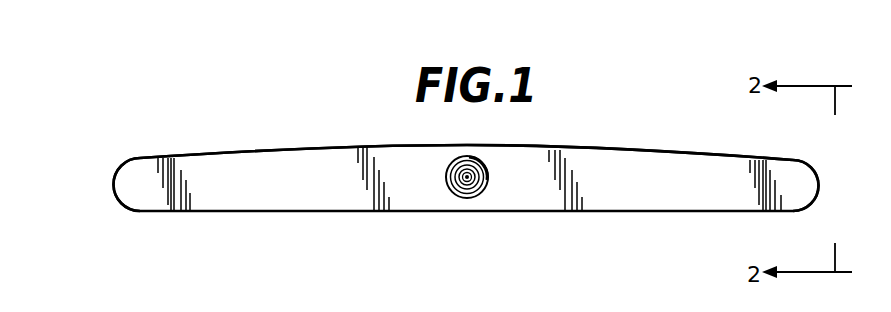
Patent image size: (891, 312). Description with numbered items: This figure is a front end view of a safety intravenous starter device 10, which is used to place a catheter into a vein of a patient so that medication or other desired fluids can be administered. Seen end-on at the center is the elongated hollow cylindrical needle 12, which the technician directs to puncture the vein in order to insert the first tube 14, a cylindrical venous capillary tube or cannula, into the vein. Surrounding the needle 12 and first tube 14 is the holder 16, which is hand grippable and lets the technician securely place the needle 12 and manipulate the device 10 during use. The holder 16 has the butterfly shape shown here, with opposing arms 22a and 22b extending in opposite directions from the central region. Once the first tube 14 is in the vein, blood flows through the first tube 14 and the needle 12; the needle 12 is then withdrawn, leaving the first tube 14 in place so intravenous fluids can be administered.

The safety intravenous starter device 10 is at (350, 213).
The needle 12 is at (475, 195).
The first tube 14 is at (453, 192).
The holder 16 is at (312, 148).
The arm 22a is at (202, 155).
The arm 22b is at (698, 157).